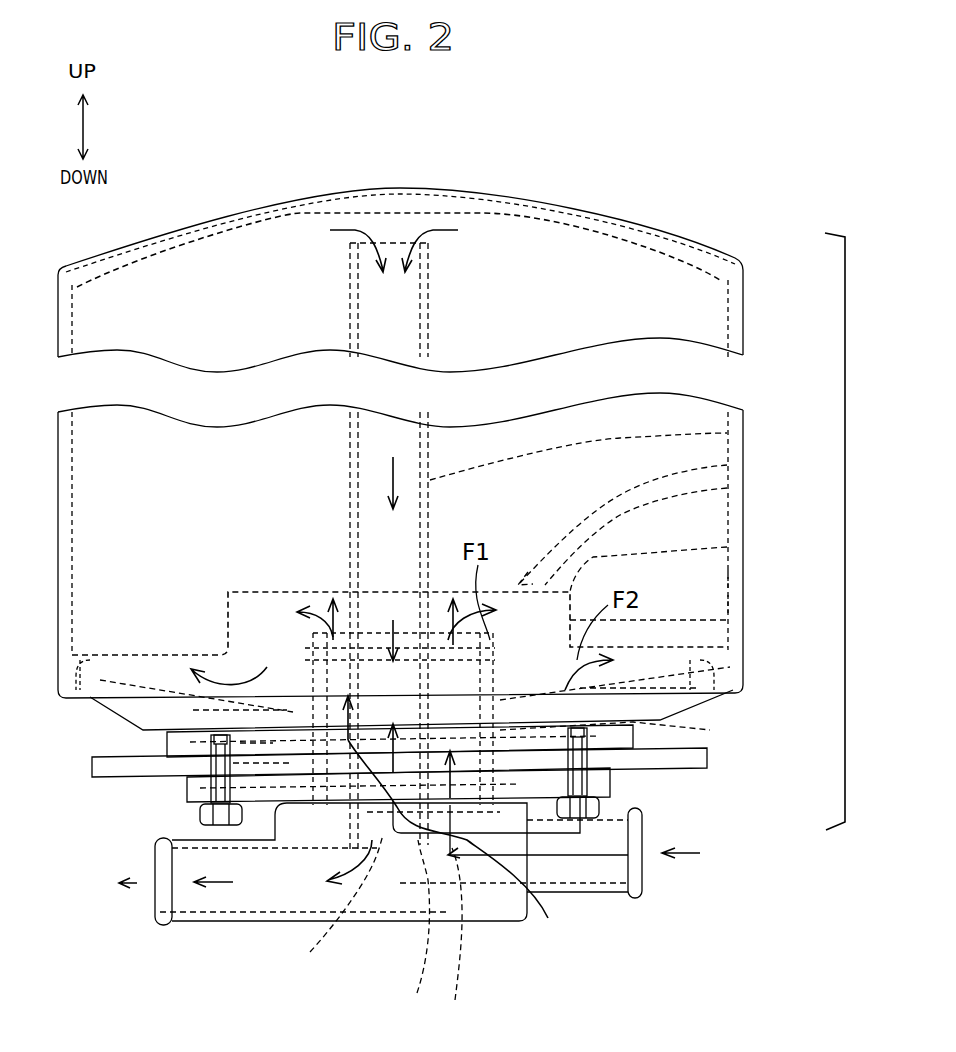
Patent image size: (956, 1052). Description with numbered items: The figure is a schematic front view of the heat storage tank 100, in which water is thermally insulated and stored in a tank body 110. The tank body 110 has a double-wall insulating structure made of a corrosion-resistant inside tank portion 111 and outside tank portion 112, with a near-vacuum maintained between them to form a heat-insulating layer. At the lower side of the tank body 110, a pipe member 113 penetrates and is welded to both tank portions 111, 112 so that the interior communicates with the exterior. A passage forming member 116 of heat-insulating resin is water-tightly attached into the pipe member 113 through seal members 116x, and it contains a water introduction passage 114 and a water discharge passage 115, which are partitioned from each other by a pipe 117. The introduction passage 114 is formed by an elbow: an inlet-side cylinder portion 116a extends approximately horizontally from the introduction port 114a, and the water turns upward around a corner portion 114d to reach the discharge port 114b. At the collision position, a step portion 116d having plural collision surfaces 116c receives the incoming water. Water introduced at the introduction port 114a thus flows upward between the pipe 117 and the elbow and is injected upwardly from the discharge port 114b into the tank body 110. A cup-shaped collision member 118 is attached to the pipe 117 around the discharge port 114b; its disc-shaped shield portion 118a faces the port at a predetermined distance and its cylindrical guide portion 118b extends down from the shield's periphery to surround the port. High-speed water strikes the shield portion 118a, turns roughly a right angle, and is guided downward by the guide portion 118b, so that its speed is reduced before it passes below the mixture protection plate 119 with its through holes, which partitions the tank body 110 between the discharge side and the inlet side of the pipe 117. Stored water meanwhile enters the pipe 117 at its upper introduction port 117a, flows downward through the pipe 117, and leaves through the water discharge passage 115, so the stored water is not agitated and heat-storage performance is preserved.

The heat storage tank 100 is at (371, 160).
The tank body 110 is at (745, 515).
The inside tank portion 111 is at (740, 605).
The outside tank portion 112 is at (742, 578).
The pipe member 113 is at (633, 722).
The water introduction passage 114 is at (600, 787).
The introduction port 114a is at (642, 868).
The discharge port 114b is at (745, 627).
The corner portion 114d is at (464, 841).
The water discharge passage 115 is at (180, 925).
The passage forming member 116 is at (487, 938).
The inlet-side cylinder portion 116a is at (600, 895).
The collision surfaces 116c is at (344, 926).
The step portion 116d is at (479, 932).
The seal members 116x is at (90, 686).
The pipe 117 is at (745, 427).
The introduction port 117a is at (408, 240).
The collision member 118 is at (745, 488).
The shield portion 118a is at (745, 462).
The guide portion 118b is at (745, 553).
The mixture protection plate 119 is at (745, 655).